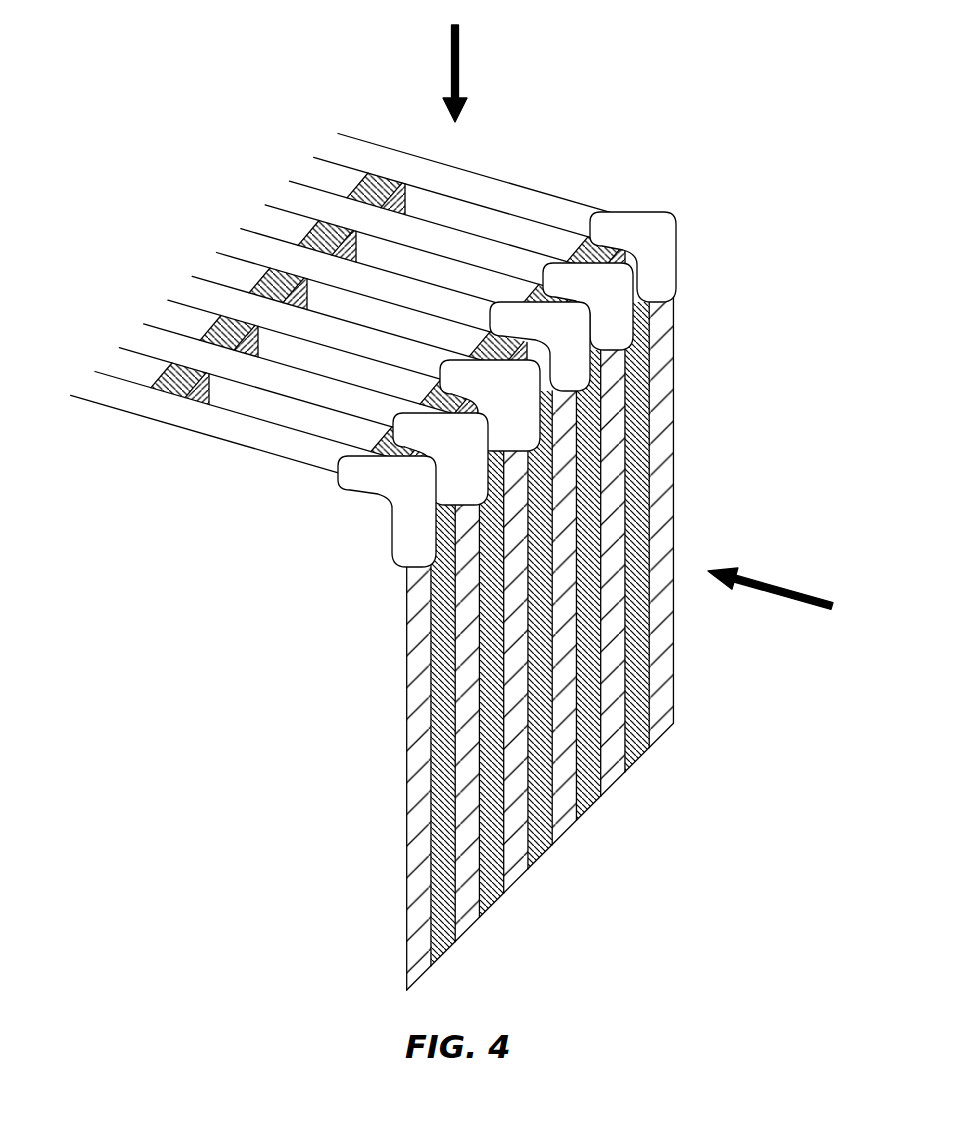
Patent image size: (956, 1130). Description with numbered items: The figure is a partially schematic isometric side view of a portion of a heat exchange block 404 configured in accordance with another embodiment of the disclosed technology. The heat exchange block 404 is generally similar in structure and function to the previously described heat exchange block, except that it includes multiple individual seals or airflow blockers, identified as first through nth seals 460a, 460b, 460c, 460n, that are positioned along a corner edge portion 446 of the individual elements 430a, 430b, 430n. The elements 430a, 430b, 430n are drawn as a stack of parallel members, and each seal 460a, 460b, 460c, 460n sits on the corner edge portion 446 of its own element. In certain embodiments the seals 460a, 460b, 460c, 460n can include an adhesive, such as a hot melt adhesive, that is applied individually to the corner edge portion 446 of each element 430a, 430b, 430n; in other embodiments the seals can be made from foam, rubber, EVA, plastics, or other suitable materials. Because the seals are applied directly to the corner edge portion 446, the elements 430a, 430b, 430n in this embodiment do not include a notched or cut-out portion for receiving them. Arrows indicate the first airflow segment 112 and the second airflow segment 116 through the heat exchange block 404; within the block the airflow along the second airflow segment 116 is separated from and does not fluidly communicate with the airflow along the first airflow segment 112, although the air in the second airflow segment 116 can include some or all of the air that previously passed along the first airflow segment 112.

The heat exchange block 404 is at (108, 168).
The element 430a is at (94, 373).
The element 430b is at (141, 326).
The element 430n is at (343, 132).
The first seal 460a is at (396, 568).
The second seal 460b is at (407, 450).
The third seal 460c is at (412, 427).
The nth seal 460n is at (669, 224).
The corner edge portion 446 is at (359, 529).
The first airflow segment 112 is at (468, 63).
The second airflow segment 116 is at (790, 590).